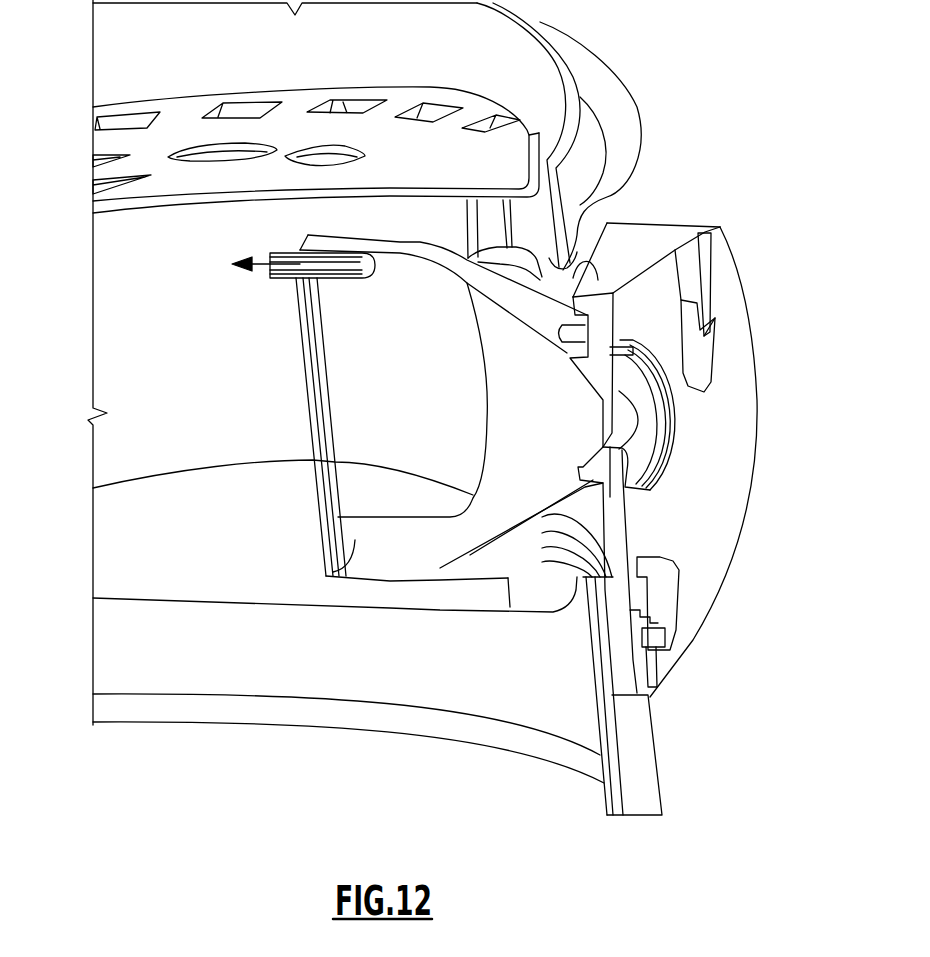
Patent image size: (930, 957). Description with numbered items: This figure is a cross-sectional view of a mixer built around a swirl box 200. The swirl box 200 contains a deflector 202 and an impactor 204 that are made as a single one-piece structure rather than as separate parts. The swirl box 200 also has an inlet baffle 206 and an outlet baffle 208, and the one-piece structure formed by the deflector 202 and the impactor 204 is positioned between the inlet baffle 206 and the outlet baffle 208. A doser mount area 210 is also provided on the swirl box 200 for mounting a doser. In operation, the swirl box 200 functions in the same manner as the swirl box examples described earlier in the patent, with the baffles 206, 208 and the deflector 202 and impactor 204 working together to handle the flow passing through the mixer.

The swirl box 200 is at (529, 620).
The deflector 202 is at (400, 243).
The impactor 204 is at (314, 433).
The inlet baffle 206 is at (111, 86).
The outlet baffle 208 is at (137, 600).
The doser mount area 210 is at (717, 488).